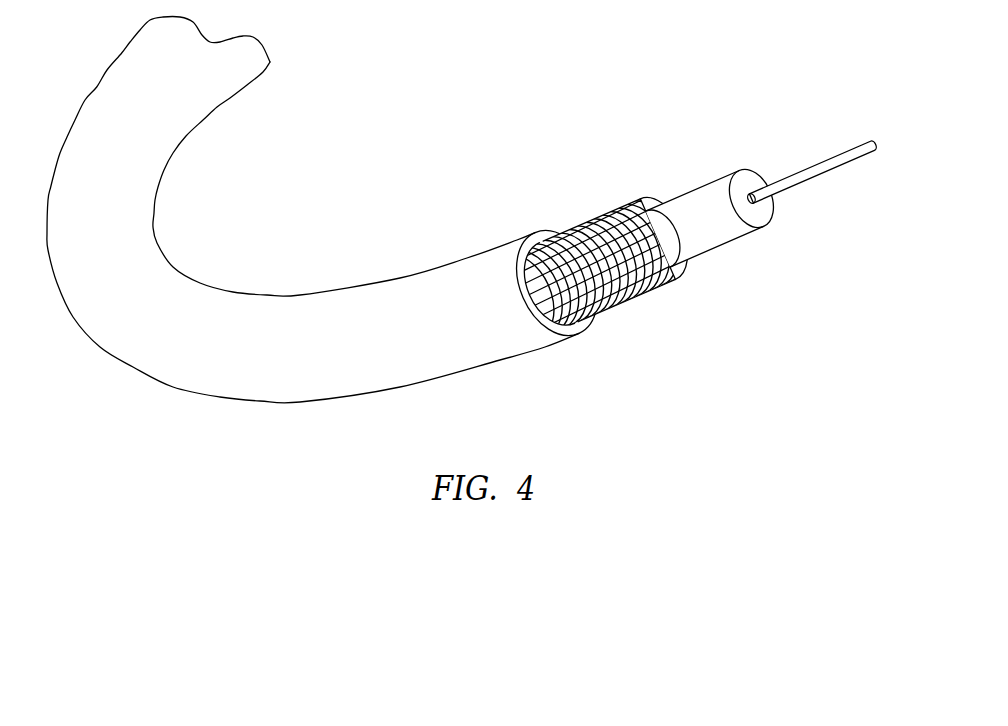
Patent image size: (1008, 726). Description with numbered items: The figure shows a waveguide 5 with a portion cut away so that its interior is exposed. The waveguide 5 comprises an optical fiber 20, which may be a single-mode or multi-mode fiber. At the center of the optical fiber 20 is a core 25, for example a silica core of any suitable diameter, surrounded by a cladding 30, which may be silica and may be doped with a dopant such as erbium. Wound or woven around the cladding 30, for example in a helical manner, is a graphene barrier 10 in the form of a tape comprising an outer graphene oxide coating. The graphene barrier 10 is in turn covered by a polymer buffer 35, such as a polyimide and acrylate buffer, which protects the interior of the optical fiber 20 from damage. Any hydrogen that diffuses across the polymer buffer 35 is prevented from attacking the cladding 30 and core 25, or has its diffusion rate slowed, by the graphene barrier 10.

The waveguide 5 is at (388, 200).
The graphene barrier 10 is at (638, 288).
The optical fiber 20 is at (747, 263).
The core 25 is at (828, 152).
The cladding 30 is at (692, 213).
The polymer buffer 35 is at (487, 360).